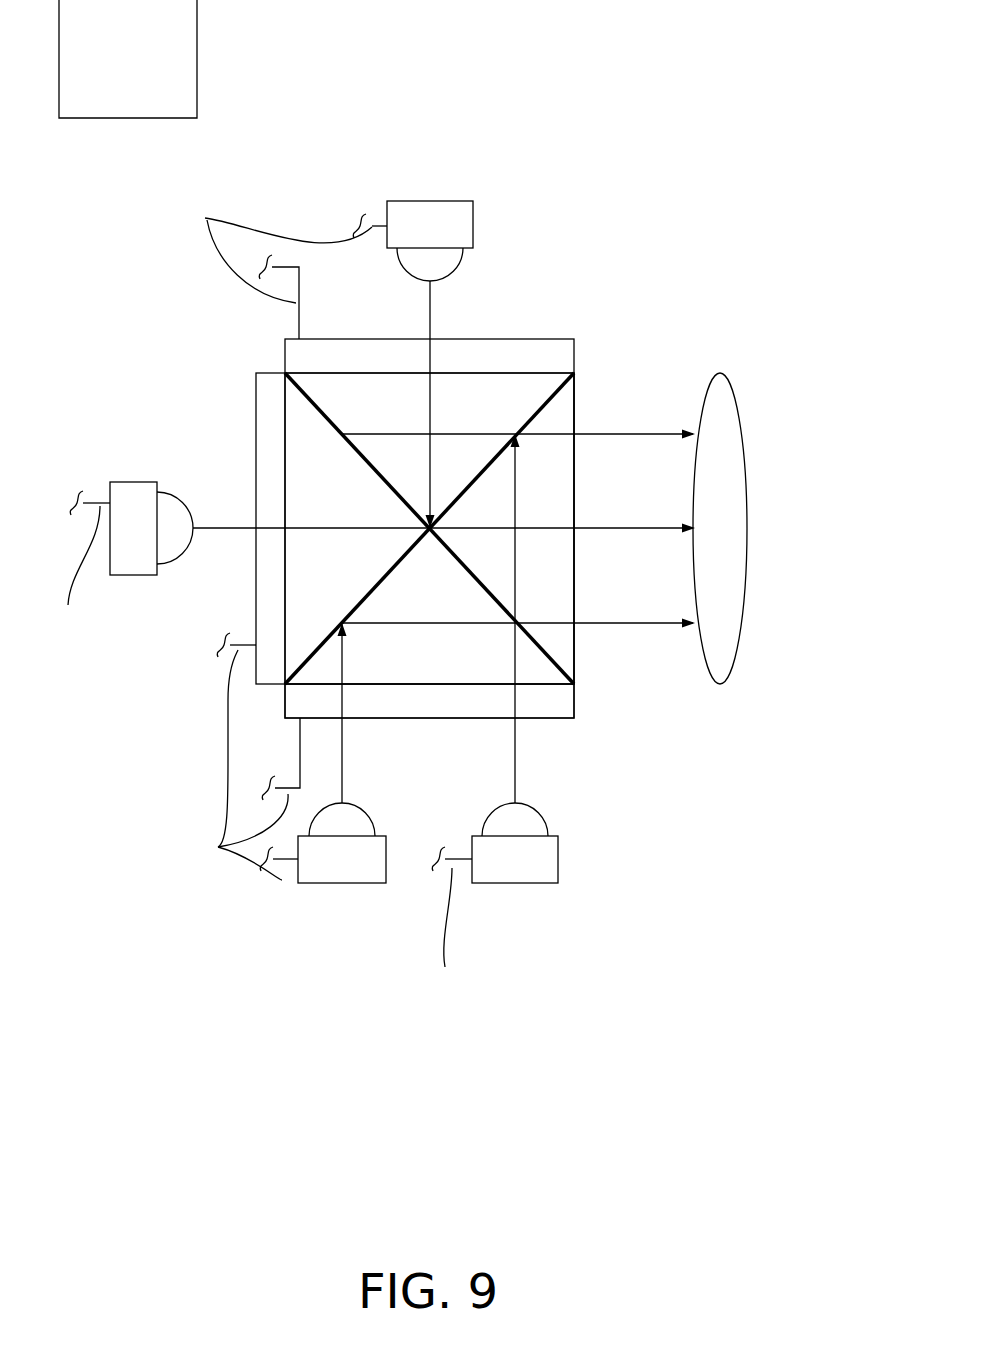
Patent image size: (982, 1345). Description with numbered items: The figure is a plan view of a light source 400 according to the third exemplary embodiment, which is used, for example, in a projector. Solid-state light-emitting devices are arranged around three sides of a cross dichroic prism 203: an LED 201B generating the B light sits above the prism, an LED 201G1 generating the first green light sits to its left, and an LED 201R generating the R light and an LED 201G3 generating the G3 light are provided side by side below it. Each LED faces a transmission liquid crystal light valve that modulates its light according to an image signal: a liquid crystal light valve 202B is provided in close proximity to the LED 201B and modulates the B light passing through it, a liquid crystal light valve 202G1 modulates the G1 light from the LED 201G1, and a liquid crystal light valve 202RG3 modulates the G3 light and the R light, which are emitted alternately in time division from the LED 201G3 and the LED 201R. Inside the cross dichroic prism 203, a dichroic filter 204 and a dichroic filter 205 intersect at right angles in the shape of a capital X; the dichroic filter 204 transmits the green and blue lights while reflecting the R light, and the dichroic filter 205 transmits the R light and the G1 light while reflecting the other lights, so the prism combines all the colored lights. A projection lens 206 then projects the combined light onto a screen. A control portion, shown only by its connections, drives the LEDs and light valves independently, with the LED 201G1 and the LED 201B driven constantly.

The light source 400 is at (784, 245).
The LED 201B is at (430, 201).
The LED 201G1 is at (135, 482).
The LED 201G3 is at (347, 884).
The LED 201R is at (520, 884).
The liquid crystal light valve 202B is at (563, 339).
The liquid crystal light valve 202G1 is at (256, 392).
The liquid crystal light valve 202RG3 is at (550, 718).
The cross dichroic prism 203 is at (468, 383).
The dichroic filter 204 is at (553, 398).
The dichroic filter 205 is at (320, 411).
The projection lens 206 is at (720, 373).